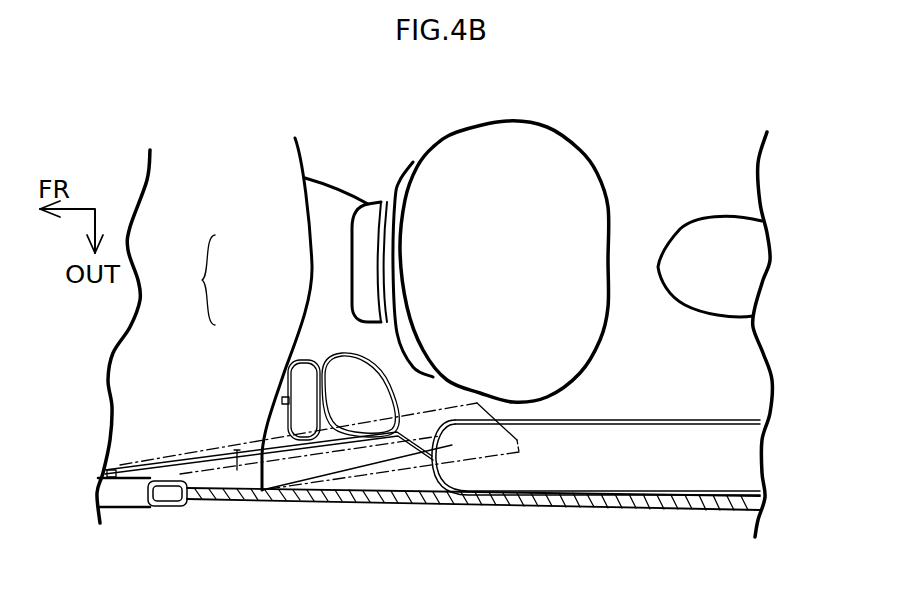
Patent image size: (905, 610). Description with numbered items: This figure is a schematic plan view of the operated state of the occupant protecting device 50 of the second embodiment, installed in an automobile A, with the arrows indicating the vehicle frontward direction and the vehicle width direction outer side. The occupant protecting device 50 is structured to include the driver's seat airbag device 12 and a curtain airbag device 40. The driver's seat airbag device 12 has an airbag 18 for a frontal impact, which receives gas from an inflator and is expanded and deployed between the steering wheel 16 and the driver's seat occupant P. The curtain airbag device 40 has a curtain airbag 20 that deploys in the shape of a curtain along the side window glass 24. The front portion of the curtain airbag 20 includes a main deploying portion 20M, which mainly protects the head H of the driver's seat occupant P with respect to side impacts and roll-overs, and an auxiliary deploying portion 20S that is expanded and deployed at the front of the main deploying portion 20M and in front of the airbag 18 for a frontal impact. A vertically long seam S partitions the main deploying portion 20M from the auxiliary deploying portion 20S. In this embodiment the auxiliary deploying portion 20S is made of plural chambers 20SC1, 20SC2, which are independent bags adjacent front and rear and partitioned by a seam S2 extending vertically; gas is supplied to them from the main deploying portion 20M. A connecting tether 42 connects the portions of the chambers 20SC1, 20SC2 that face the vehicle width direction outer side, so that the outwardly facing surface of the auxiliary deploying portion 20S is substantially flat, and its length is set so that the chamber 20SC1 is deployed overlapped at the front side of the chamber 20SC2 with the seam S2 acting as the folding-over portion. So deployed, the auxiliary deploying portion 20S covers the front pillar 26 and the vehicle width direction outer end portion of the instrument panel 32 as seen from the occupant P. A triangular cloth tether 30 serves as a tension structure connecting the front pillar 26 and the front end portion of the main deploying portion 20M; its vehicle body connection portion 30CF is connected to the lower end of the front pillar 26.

The driver's seat airbag device 12 is at (621, 158).
The steering wheel 16 is at (413, 170).
The airbag for a frontal impact 18 is at (508, 137).
The curtain airbag 20 is at (742, 413).
The main deploying portion 20M is at (603, 436).
The auxiliary deploying portion 20S is at (182, 280).
The chamber 20SC1 is at (303, 367).
The chamber 20SC2 is at (348, 367).
The side window glass 24 is at (572, 500).
The front pillar 26 is at (128, 497).
The triangular cloth tether 30 is at (255, 436).
The vehicle body connection portion 30CF is at (113, 468).
The instrument panel 32 is at (286, 162).
The curtain airbag device 40 is at (688, 402).
The connecting tether 42 is at (287, 398).
The occupant protecting device 50 is at (685, 131).
The driver's seat occupant P is at (735, 208).
The head H is at (740, 263).
The seam S is at (433, 452).
The seam S2 is at (325, 357).
The automobile A is at (692, 530).